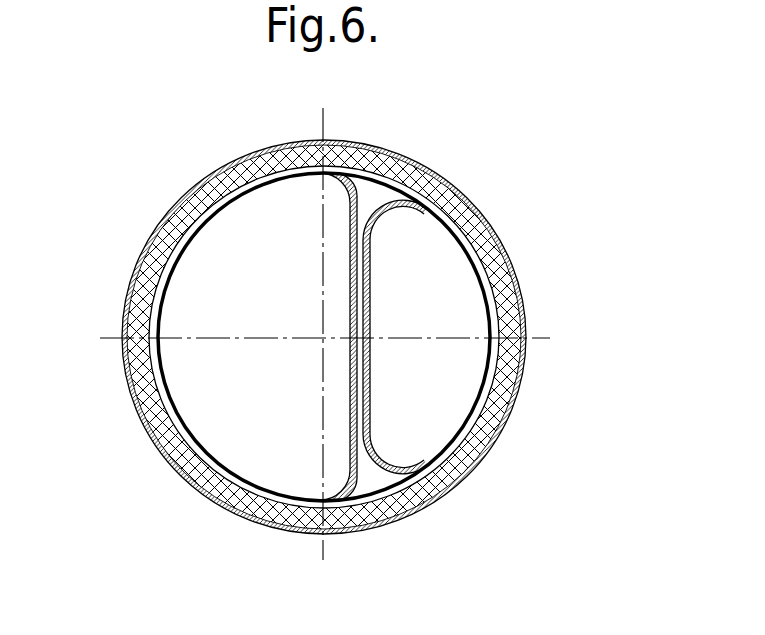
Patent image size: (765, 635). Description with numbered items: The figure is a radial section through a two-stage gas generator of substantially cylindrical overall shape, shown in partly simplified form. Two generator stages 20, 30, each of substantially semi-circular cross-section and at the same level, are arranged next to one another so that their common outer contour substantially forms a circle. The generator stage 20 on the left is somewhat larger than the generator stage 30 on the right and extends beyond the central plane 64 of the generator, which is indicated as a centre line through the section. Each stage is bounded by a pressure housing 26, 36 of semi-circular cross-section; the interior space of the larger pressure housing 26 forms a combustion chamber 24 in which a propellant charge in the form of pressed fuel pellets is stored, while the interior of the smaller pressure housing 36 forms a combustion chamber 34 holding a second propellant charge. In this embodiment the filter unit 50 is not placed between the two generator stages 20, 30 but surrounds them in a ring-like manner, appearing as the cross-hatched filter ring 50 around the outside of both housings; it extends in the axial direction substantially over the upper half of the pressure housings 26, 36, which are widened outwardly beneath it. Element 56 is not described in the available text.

The generator stage 20 is at (228, 255).
The combustion chamber 24 is at (190, 382).
The pressure housing 26 is at (352, 480).
The generator stage 30 is at (423, 250).
The combustion chamber 34 is at (442, 408).
The pressure housing 36 is at (397, 472).
The filter unit 50 is at (500, 288).
The outer skin 56 is at (527, 363).
The central plane 64 is at (320, 317).